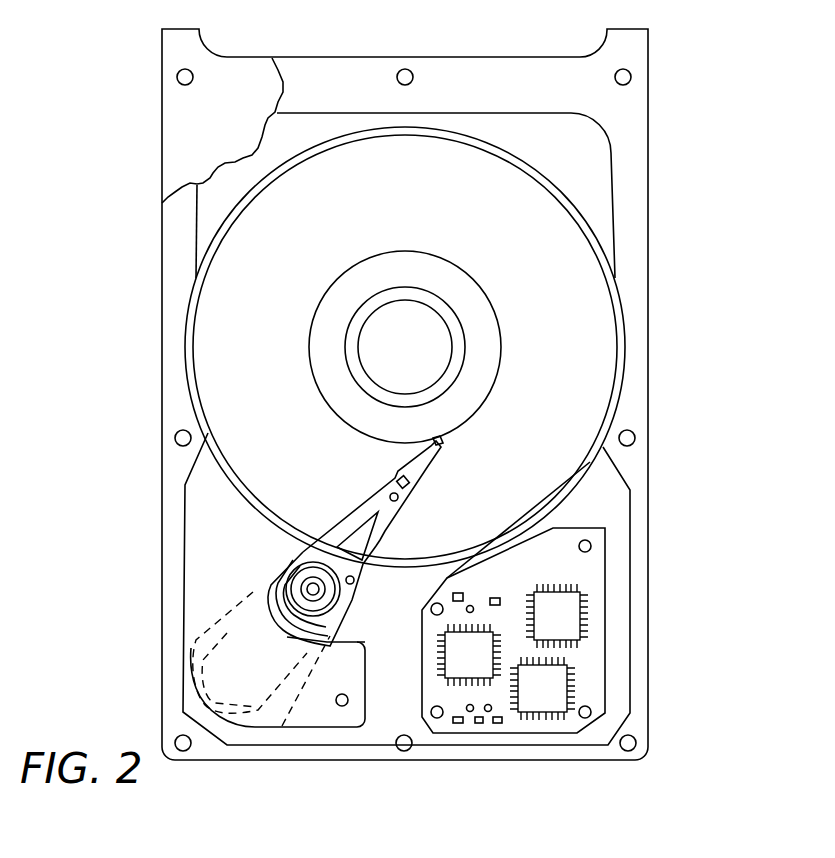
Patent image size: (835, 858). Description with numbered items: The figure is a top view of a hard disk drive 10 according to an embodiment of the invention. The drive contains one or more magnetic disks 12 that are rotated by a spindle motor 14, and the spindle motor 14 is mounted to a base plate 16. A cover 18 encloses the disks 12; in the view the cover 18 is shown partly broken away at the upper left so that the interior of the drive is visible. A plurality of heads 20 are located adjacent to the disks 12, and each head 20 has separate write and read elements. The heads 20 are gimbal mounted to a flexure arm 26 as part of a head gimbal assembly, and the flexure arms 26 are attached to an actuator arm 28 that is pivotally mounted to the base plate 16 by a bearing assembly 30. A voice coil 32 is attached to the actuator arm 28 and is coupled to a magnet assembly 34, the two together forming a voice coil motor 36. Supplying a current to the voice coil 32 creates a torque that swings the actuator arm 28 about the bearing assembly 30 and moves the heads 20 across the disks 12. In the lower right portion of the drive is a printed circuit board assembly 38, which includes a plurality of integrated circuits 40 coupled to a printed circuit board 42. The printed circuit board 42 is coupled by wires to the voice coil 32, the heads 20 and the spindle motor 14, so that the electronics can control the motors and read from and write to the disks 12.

The hard disk drive 10 is at (640, 332).
The magnetic disk 12 is at (405, 347).
The spindle motor 14 is at (407, 345).
The base plate 16 is at (595, 191).
The cover 18 is at (177, 122).
The head 20 is at (437, 445).
The flexure arm 26 is at (415, 472).
The actuator arm 28 is at (317, 550).
The bearing assembly 30 is at (303, 600).
The voice coil 32 is at (253, 717).
The magnet assembly 34 is at (320, 717).
The voice coil motor 36 is at (170, 657).
The printed circuit board assembly 38 is at (584, 657).
The integrated circuit 40 is at (533, 692).
The printed circuit board 42 is at (592, 572).